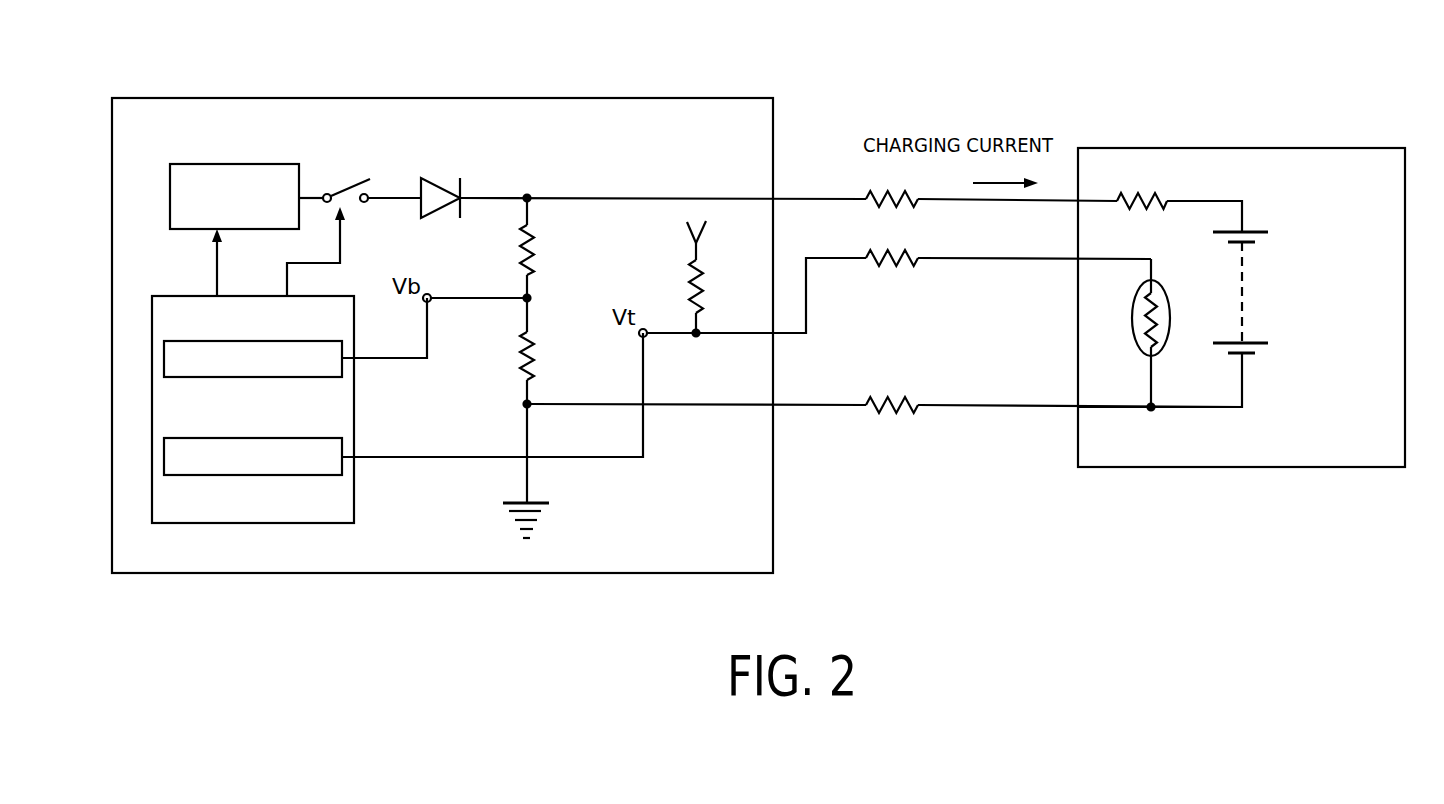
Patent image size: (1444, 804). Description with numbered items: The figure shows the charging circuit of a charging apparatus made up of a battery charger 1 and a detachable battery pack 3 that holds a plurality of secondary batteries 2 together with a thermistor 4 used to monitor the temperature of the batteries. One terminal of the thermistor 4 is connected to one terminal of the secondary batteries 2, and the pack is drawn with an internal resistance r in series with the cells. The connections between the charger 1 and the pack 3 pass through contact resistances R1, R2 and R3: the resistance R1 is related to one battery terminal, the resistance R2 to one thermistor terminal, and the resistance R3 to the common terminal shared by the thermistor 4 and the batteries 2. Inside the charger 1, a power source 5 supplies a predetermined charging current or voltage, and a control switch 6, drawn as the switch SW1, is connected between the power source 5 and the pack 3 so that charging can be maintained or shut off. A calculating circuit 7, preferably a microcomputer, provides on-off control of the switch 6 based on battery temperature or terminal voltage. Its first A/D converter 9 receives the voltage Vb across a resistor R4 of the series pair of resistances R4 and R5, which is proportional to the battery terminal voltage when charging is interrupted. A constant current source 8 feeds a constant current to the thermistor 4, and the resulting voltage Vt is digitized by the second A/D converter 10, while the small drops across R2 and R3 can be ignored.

The battery charger 1 is at (708, 70).
The secondary batteries 2 is at (1243, 288).
The battery pack 3 is at (1331, 131).
The thermistor 4 is at (1162, 352).
The power source 5 is at (200, 164).
The control switch 6 is at (442, 180).
The calculating circuit 7 is at (178, 296).
The constant current source 8 is at (701, 272).
The first A/D converter 9 is at (342, 367).
The second A/D converter 10 is at (342, 438).
The charging switch SW1 is at (356, 174).
The contact resistance R1 is at (892, 190).
The contact resistance R2 is at (892, 248).
The contact resistance R3 is at (892, 394).
The resistor R4 is at (545, 250).
The resistor R5 is at (545, 356).
The internal resistance of battery r is at (1142, 190).